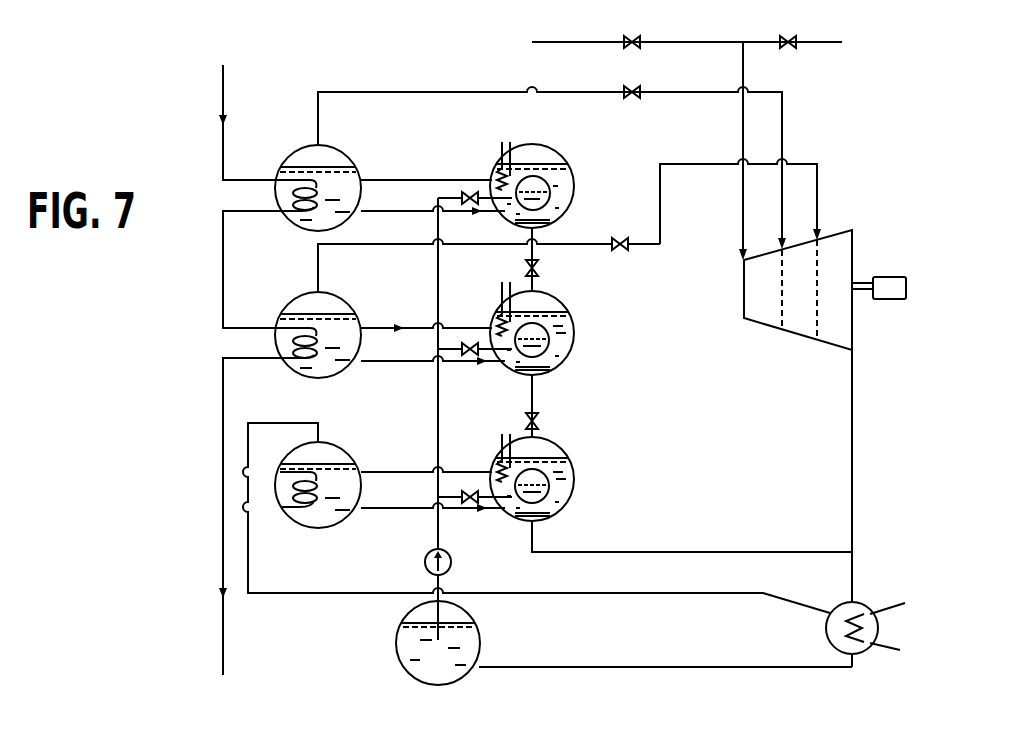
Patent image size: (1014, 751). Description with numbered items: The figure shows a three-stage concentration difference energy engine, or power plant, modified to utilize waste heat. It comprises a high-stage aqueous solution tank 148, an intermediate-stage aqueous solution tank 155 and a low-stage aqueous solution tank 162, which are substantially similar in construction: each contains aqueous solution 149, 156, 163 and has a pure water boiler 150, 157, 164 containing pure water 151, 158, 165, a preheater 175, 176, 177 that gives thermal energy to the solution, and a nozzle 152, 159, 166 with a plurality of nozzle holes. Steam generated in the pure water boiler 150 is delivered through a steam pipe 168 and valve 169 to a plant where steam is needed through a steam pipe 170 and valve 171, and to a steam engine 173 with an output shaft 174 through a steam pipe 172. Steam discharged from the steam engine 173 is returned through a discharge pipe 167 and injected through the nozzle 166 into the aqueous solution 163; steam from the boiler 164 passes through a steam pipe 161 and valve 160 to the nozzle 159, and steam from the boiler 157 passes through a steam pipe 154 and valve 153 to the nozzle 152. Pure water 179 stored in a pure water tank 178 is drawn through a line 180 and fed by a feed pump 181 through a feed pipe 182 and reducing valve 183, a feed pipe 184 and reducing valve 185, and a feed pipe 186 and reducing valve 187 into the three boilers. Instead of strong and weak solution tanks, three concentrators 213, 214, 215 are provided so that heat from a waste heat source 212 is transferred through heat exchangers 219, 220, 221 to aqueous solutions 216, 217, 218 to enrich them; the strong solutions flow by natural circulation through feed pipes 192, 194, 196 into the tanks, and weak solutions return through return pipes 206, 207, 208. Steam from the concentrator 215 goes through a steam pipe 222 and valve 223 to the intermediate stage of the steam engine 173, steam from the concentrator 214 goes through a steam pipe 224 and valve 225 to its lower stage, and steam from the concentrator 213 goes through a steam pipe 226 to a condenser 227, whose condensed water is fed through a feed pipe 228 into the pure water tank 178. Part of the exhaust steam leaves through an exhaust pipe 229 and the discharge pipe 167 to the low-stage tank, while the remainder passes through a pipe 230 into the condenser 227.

The high-stage aqueous solution tank 148 is at (544, 146).
The aqueous solution 149 is at (560, 170).
The pure water boiler 150 is at (555, 190).
The pure water 151 is at (545, 201).
The nozzle 152 is at (546, 222).
The valve 153 is at (550, 258).
The steam pipe 154 is at (535, 288).
The intermediate-stage aqueous solution tank 155 is at (568, 318).
The aqueous solution 156 is at (568, 331).
The pure water boiler 157 is at (555, 340).
The pure water 158 is at (556, 353).
The nozzle 159 is at (542, 374).
The valve 160 is at (542, 418).
The steam pipe 161 is at (540, 434).
The low-stage aqueous solution tank 162 is at (573, 465).
The aqueous solution 163 is at (572, 478).
The pure water boiler 164 is at (550, 500).
The pure water 165 is at (550, 507).
The nozzle 166 is at (544, 516).
The discharge pipe 167 is at (762, 551).
The steam pipe 168 is at (603, 42).
The valve 169 is at (636, 36).
The steam pipe 170 is at (764, 40).
The valve 171 is at (786, 36).
The steam pipe 172 is at (742, 130).
The steam engine 173 is at (838, 230).
The output shaft 174 is at (887, 276).
The preheater 175 is at (511, 142).
The preheater 176 is at (508, 282).
The preheater 177 is at (513, 434).
The pure water tank 178 is at (448, 683).
The pure water 179 is at (463, 652).
The pump suction line 180 is at (444, 582).
The feed pump 181 is at (447, 536).
The feed pipe 182 is at (444, 499).
The reducing valve 183 is at (468, 492).
The feed pipe 184 is at (442, 352).
The reducing valve 185 is at (472, 342).
The feed pipe 186 is at (436, 279).
The reducing valve 187 is at (470, 191).
The feed pipe 192 is at (408, 512).
The feed pipe 194 is at (403, 366).
The feed pipe 196 is at (399, 214).
The return pipe 206 is at (399, 471).
The return pipe 207 is at (382, 300).
The return pipe 208 is at (372, 178).
The waste heat source 212 is at (226, 88).
The concentrator 213 is at (327, 528).
The concentrator 214 is at (320, 380).
The concentrator 215 is at (307, 232).
The aqueous solution 216 is at (297, 517).
The aqueous solution 217 is at (302, 363).
The aqueous solution 218 is at (300, 220).
The heat exchanger 219 is at (320, 502).
The heat exchanger 220 is at (303, 324).
The heat exchanger 221 is at (307, 178).
The steam pipe 222 is at (470, 92).
The valve 223 is at (642, 88).
The steam pipe 224 is at (394, 246).
The valve 225 is at (624, 250).
The steam pipe 226 is at (703, 591).
The condenser 227 is at (827, 633).
The feed pipe 228 is at (648, 666).
The exhaust pipe 229 is at (855, 506).
The pipe 230 is at (855, 590).